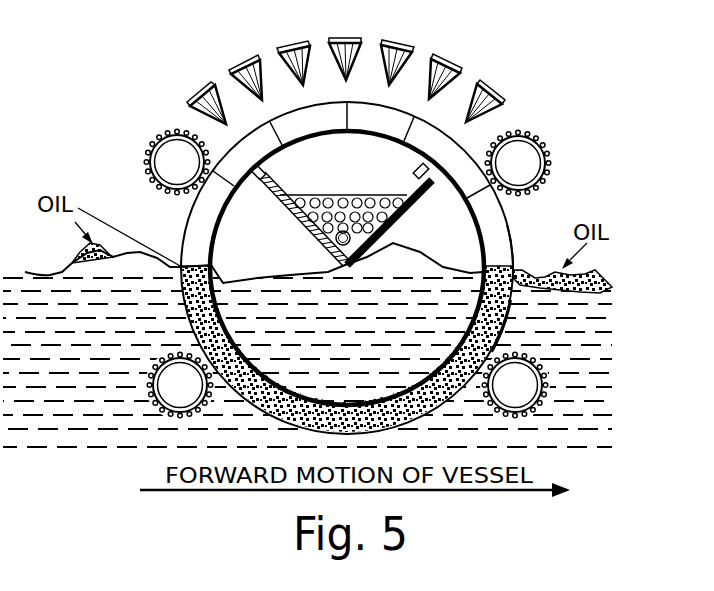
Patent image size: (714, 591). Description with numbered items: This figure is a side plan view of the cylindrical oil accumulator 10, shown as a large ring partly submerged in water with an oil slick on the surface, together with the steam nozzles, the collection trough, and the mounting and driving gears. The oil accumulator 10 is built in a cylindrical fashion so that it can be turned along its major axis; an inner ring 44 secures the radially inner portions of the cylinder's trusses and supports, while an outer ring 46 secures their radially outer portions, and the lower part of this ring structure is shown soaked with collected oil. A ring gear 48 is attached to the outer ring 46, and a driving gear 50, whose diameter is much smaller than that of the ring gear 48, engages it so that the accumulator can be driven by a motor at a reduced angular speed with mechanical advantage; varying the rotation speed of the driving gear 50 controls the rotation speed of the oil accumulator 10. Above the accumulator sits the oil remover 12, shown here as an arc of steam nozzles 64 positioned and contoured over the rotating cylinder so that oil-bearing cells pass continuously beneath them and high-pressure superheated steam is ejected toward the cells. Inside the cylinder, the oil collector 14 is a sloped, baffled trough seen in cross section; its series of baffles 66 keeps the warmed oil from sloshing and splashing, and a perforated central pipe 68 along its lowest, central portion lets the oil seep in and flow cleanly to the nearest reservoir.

The oil accumulator 10 is at (130, 198).
The oil remover 12 is at (325, 62).
The oil collector 14 is at (407, 224).
The inner ring 44 is at (403, 380).
The outer ring 46 is at (503, 343).
The ring gear 48 is at (500, 253).
The driving gear 50 is at (523, 131).
The steam nozzles 64 is at (460, 78).
The baffles 66 is at (338, 195).
The central pipe 68 is at (333, 247).